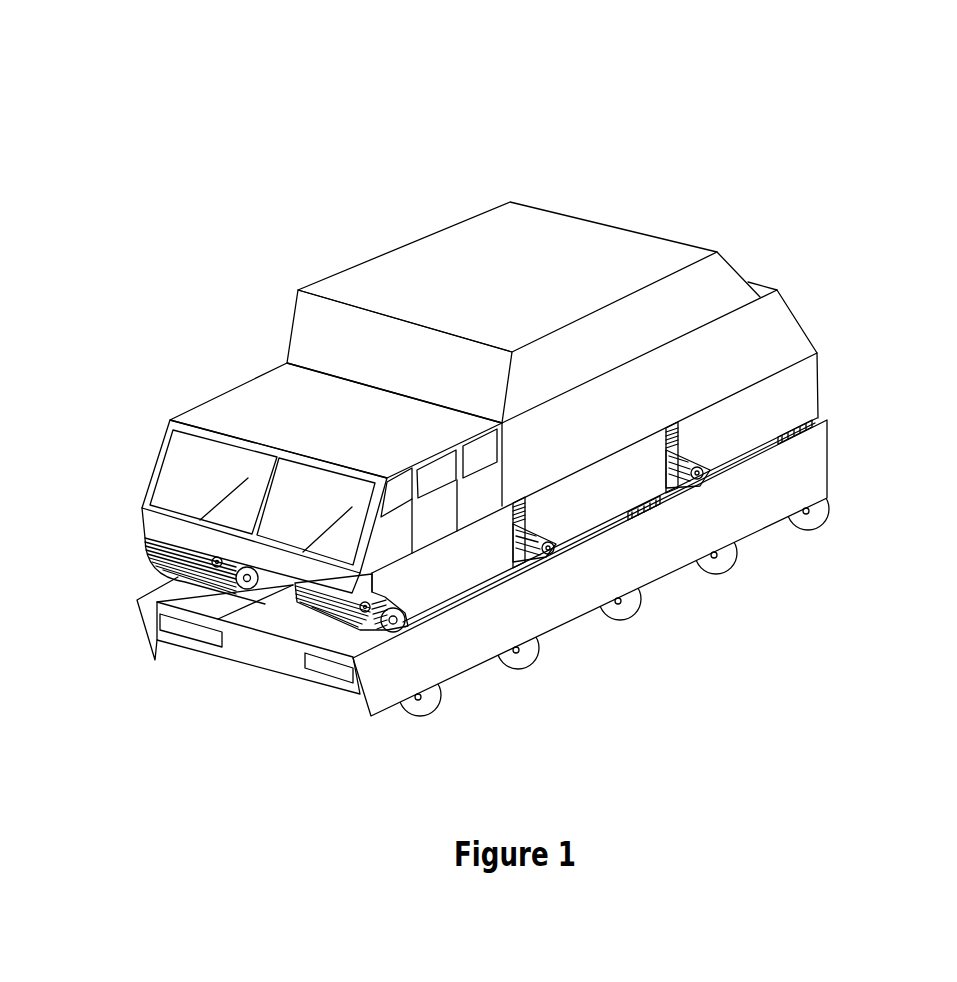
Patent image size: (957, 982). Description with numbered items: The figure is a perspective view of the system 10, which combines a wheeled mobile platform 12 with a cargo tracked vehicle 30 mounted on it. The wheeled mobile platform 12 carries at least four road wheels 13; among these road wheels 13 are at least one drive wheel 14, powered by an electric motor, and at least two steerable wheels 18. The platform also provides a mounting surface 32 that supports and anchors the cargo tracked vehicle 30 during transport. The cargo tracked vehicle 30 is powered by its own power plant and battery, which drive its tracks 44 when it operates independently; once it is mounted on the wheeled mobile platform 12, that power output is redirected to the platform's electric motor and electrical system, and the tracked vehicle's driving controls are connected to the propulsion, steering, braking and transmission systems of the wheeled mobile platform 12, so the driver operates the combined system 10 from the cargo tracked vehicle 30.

The system 10 is at (806, 127).
The wheeled mobile platform 12 is at (811, 466).
The road wheels 13 is at (685, 642).
The drive wheel 14 is at (806, 518).
The steerable wheels 18 is at (433, 701).
The cargo tracked vehicle 30 is at (755, 268).
The mounting surface 32 is at (812, 419).
The tracks 44 is at (335, 610).